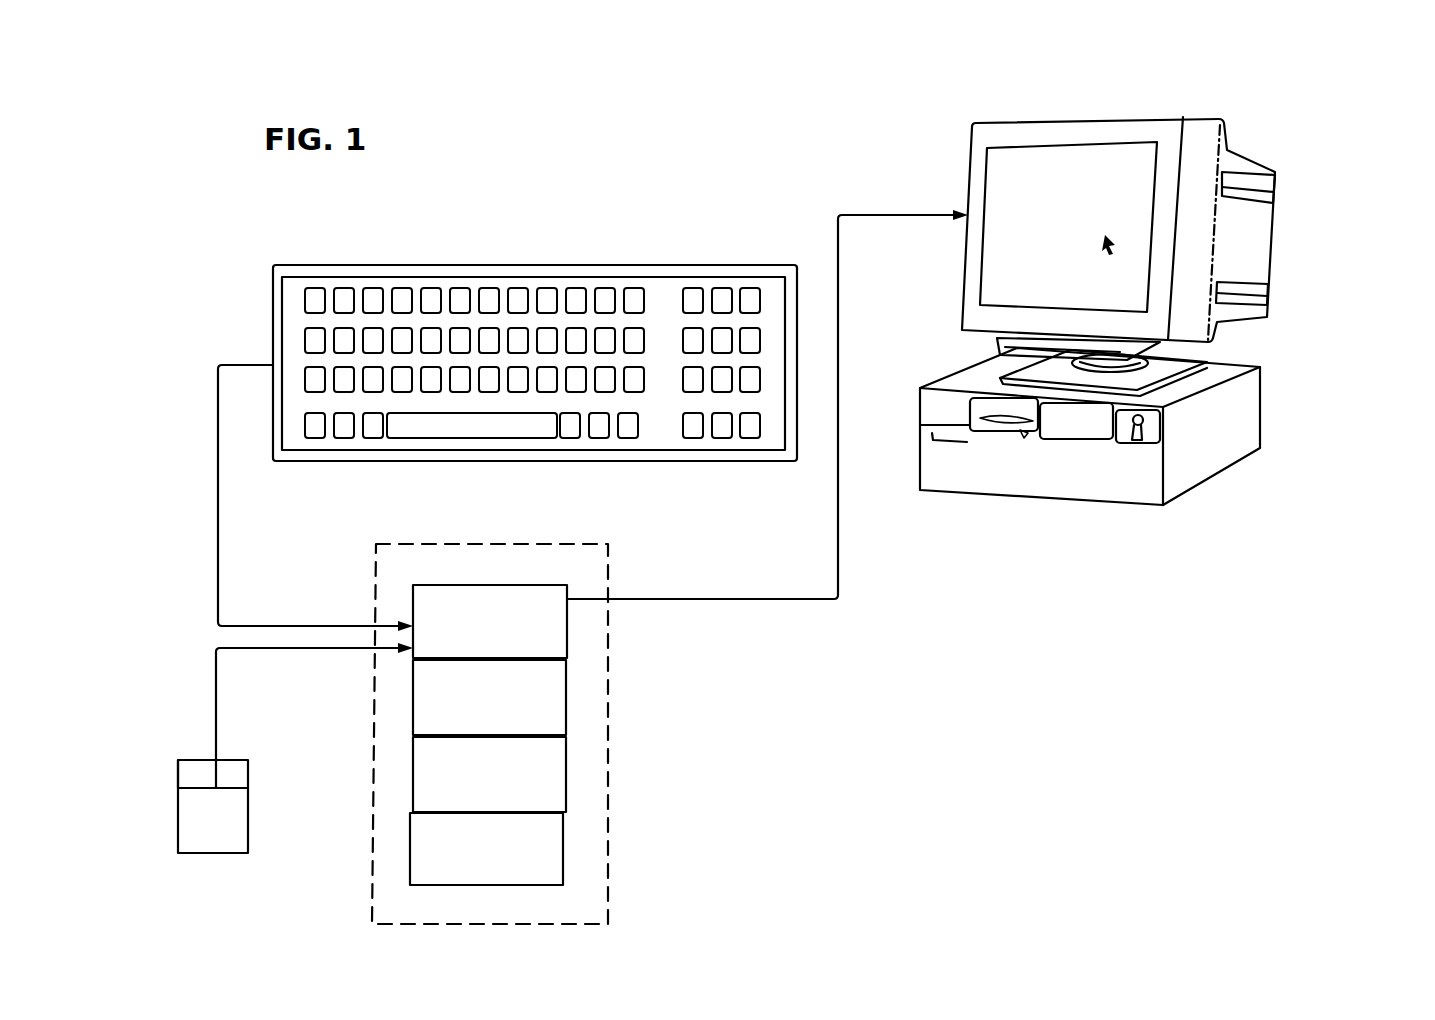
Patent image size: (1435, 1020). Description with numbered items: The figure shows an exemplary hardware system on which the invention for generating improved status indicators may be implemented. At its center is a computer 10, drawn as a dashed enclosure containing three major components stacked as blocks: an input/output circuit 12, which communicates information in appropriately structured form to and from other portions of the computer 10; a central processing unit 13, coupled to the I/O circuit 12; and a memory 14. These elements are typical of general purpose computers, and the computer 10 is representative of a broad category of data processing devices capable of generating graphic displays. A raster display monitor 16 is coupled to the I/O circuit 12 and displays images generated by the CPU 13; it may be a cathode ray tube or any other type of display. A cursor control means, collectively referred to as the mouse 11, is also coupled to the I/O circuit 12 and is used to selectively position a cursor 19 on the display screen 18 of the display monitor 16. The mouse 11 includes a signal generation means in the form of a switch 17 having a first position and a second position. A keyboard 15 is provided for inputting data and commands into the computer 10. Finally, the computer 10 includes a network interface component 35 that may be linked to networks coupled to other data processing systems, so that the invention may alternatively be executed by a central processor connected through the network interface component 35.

The computer 10 is at (553, 544).
The cursor control means 11 is at (248, 837).
The input/output (I/O) circuit 12 is at (454, 585).
The central processing unit (CPU) 13 is at (567, 706).
The memory 14 is at (566, 774).
The keyboard 15 is at (557, 265).
The raster display monitor 16 is at (968, 165).
The switch 17 is at (187, 775).
The display screen 18 is at (1068, 158).
The cursor 19 is at (1127, 250).
The network interface component 35 is at (563, 840).